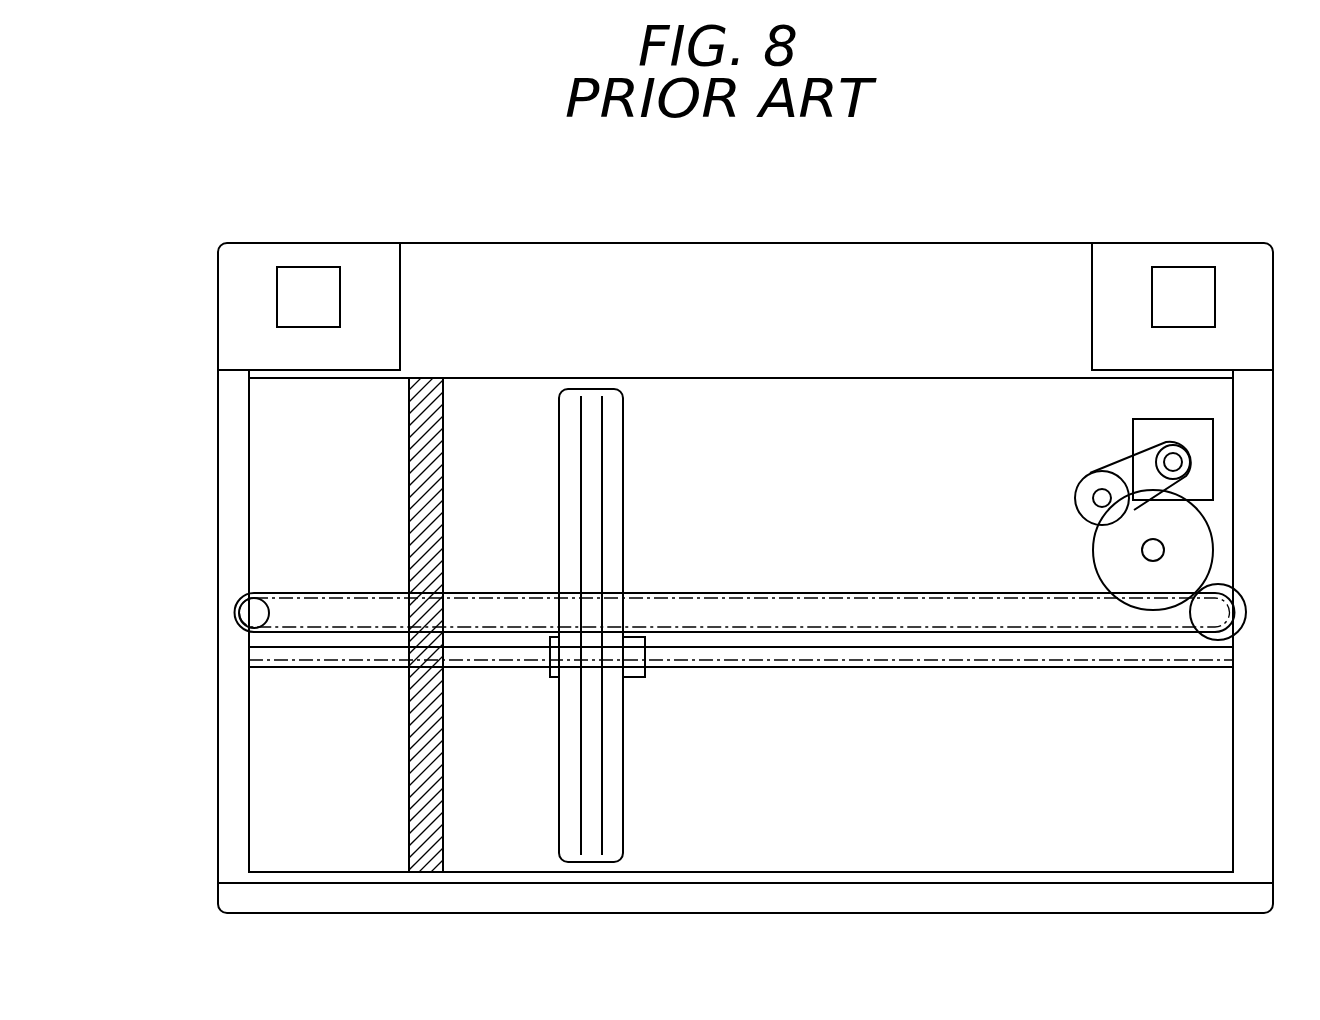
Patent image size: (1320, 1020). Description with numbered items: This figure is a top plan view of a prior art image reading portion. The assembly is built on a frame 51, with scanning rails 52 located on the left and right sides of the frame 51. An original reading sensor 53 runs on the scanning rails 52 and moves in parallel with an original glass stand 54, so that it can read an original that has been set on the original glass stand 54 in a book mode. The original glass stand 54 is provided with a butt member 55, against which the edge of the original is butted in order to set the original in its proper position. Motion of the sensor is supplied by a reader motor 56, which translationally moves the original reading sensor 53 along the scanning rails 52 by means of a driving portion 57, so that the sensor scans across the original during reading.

The frame 51 is at (217, 418).
The scanning rails 52 is at (329, 652).
The original reading sensor 53 is at (592, 402).
The original glass stand 54 is at (708, 400).
The butt member 55 is at (430, 392).
The reader motor 56 is at (1155, 427).
The driving portion 57 is at (1095, 457).